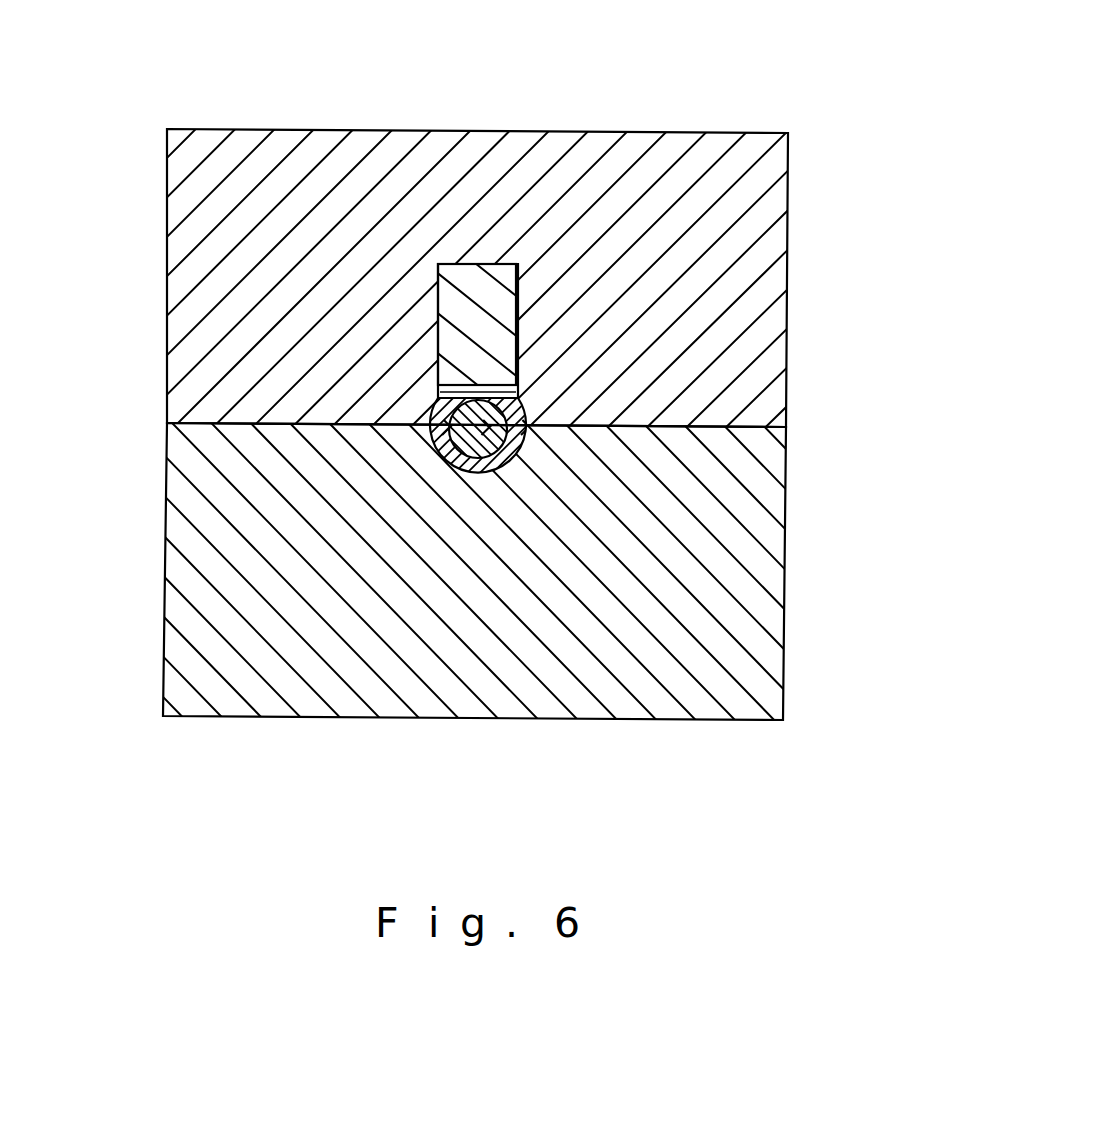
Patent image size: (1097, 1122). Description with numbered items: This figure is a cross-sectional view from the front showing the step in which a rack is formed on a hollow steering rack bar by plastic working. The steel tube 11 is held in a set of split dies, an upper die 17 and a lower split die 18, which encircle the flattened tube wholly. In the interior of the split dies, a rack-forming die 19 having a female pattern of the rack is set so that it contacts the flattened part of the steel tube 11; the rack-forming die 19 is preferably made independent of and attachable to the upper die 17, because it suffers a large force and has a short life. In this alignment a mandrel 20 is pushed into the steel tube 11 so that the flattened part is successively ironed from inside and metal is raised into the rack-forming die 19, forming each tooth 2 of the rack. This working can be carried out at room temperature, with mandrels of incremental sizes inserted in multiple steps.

The tooth of the rack 2 is at (452, 393).
The steel tube 11 is at (447, 455).
The upper die 17 is at (717, 147).
The split die 18 is at (640, 712).
The rack-forming die 19 is at (463, 278).
The mandrel 20 is at (487, 472).